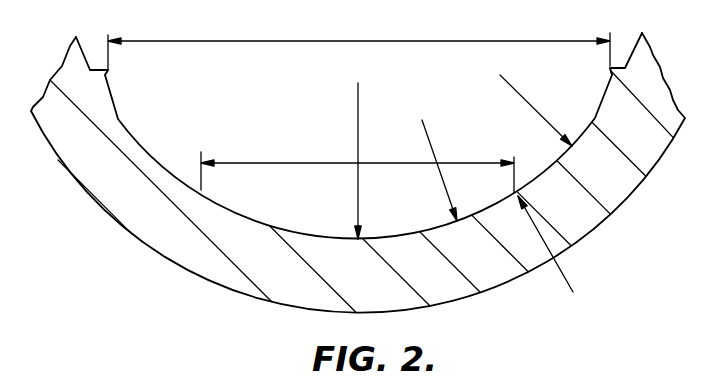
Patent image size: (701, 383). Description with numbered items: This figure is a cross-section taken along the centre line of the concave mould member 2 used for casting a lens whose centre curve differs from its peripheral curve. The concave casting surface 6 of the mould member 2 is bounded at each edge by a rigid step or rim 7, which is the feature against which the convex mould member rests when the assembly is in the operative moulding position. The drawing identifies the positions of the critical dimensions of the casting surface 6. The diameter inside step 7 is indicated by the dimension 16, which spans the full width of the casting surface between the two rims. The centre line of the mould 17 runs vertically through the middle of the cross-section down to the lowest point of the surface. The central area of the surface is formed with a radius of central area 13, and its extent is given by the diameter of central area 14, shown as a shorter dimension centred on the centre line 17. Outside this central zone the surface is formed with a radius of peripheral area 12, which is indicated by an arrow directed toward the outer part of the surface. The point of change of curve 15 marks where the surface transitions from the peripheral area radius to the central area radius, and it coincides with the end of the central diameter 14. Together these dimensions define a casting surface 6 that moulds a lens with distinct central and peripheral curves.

The concave mould member 2 is at (198, 260).
The casting surface 6 is at (268, 226).
The rigid step or rim 7 is at (108, 72).
The radius of peripheral area 12 is at (520, 96).
The radius of central area 13 is at (423, 134).
The diameter of central area 14 is at (283, 162).
The point of change of curve 15 is at (563, 275).
The diameter inside step 16 is at (300, 41).
The centre line of mould 17 is at (358, 83).